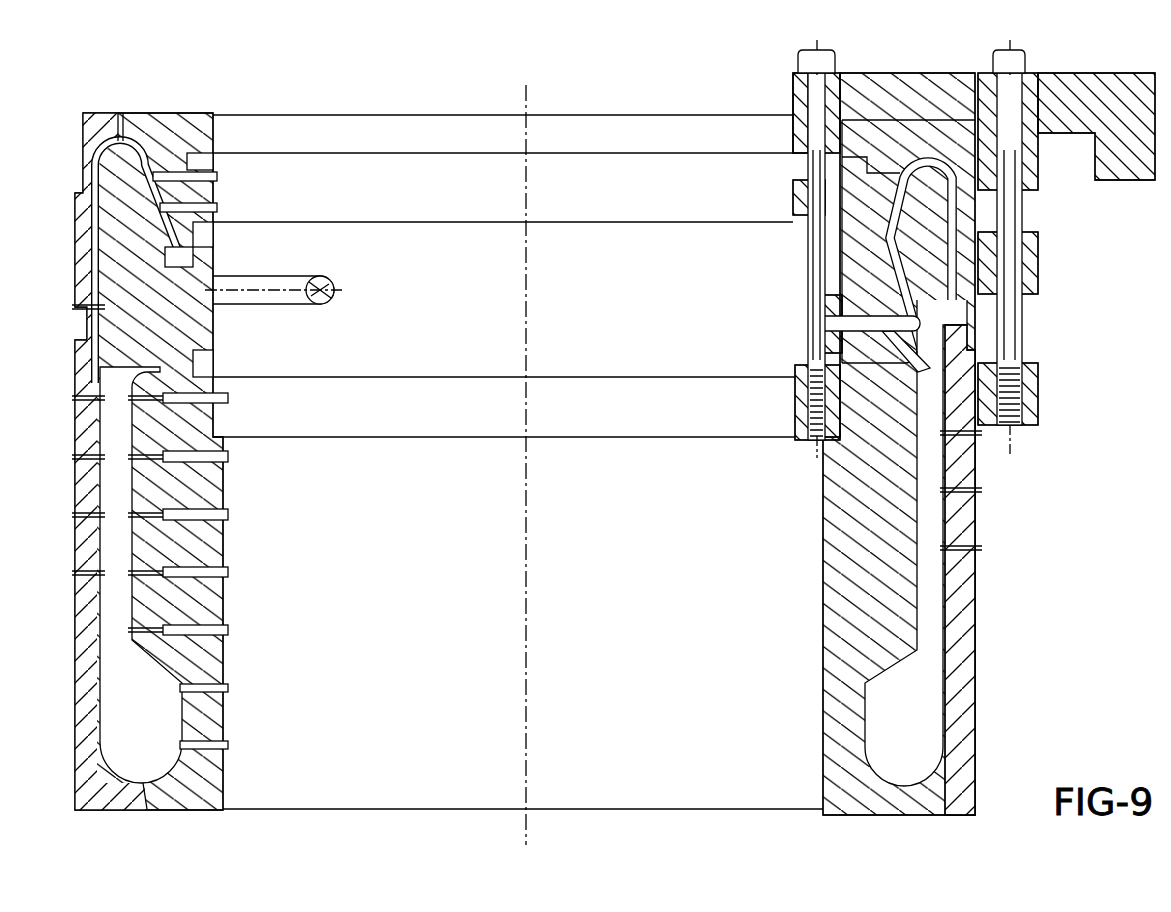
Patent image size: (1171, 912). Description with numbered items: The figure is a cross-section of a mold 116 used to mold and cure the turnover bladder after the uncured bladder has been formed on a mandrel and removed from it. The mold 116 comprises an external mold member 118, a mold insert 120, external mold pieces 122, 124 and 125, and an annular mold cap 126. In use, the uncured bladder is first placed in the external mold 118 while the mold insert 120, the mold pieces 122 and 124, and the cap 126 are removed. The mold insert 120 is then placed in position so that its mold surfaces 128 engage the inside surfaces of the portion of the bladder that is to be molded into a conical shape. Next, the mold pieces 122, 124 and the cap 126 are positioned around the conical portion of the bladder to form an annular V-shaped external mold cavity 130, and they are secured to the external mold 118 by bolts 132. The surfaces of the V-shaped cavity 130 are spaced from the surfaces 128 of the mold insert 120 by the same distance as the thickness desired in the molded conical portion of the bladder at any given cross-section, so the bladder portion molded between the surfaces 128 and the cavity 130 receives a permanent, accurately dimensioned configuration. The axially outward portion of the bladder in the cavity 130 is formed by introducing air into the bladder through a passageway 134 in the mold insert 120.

The mold 116 is at (996, 519).
The external mold member 118 is at (565, 428).
The mold insert 120 is at (815, 277).
The external mold piece 122 is at (968, 306).
The external mold piece 124 is at (822, 172).
The external mold piece 125 is at (797, 136).
The annular mold cap 126 is at (798, 77).
The mold surfaces 128 is at (937, 153).
The annular V-shaped external mold cavity 130 is at (988, 231).
The bolts 132 is at (1027, 60).
The passageway 134 is at (822, 322).